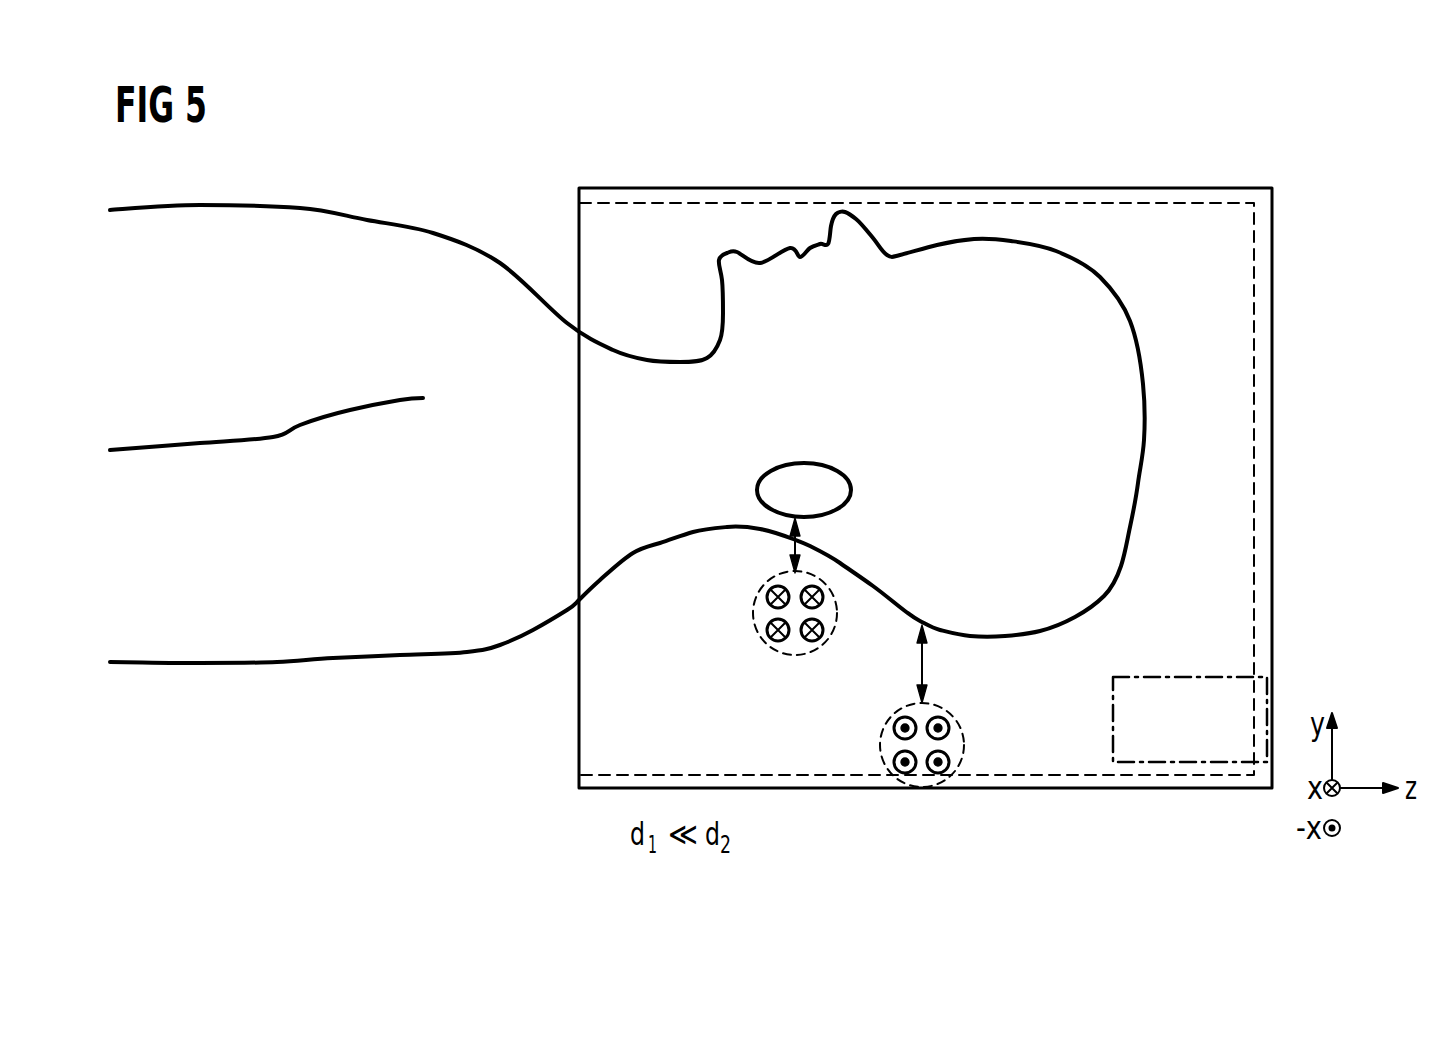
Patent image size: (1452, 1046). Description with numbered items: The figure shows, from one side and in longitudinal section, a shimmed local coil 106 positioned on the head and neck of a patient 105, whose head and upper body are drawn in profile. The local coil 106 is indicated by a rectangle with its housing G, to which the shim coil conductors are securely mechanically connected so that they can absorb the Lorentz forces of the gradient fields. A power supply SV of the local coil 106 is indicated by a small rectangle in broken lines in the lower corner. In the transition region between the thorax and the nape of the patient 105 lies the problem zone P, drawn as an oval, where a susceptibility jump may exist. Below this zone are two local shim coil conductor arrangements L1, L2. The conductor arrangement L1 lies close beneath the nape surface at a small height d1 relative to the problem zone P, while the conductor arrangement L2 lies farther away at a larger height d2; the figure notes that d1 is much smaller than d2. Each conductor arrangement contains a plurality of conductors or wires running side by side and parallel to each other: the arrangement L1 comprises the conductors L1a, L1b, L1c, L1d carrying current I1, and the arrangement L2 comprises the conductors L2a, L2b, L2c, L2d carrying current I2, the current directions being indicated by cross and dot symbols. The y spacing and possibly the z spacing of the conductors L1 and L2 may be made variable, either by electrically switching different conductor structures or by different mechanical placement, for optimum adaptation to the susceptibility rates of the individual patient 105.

The patient 105 is at (303, 208).
The local coil 106 is at (577, 237).
The housing G is at (925, 488).
The power supply SV is at (1168, 676).
The problem zone P is at (801, 462).
The height d1 is at (790, 547).
The height d2 is at (922, 662).
The conductor arrangement L1 is at (773, 577).
The conductor L1a is at (766, 596).
The conductor L1b is at (766, 631).
The conductor L1c is at (825, 629).
The conductor L1d is at (823, 588).
The current I1 is at (792, 606).
The conductor arrangement L2 is at (963, 757).
The conductor L2a is at (938, 774).
The conductor L2b is at (951, 728).
The conductor L2c is at (905, 774).
The conductor L2d is at (892, 728).
The current I2 is at (923, 767).